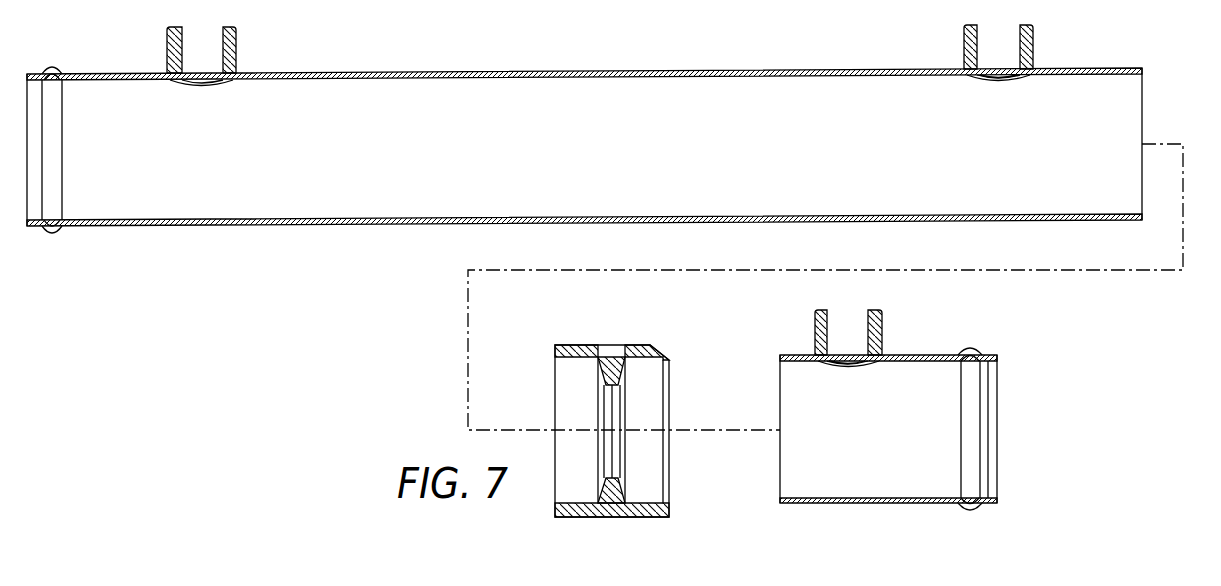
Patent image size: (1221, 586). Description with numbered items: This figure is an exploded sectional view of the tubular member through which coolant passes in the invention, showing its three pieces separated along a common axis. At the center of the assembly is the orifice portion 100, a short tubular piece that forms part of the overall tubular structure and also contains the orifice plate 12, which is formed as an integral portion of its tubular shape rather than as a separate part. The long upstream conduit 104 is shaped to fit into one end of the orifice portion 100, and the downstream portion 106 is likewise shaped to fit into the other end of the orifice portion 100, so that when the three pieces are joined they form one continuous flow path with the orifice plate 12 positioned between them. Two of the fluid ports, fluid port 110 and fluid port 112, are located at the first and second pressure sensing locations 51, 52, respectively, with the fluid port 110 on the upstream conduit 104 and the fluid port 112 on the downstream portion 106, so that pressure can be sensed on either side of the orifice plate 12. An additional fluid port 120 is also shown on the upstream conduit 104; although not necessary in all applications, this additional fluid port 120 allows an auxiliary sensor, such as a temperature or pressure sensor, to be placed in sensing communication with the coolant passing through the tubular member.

The upstream conduit 104 is at (583, 72).
The additional fluid port 120 is at (237, 53).
The fluid port 110 is at (1034, 50).
The first pressure sensing location 51 is at (1000, 70).
The orifice portion 100 is at (597, 345).
The orifice plate 12 is at (613, 488).
The downstream portion 106 is at (913, 353).
The fluid port 112 is at (815, 333).
The second pressure sensing location 52 is at (847, 353).